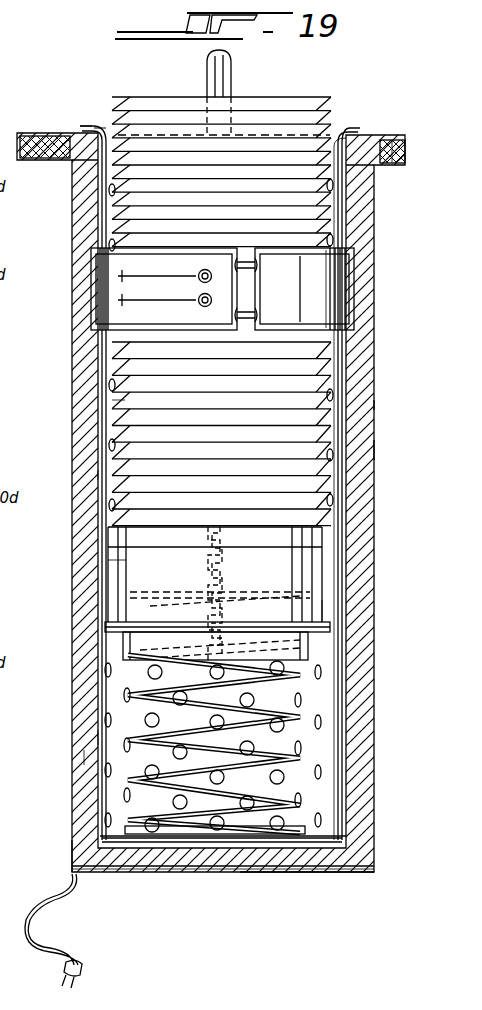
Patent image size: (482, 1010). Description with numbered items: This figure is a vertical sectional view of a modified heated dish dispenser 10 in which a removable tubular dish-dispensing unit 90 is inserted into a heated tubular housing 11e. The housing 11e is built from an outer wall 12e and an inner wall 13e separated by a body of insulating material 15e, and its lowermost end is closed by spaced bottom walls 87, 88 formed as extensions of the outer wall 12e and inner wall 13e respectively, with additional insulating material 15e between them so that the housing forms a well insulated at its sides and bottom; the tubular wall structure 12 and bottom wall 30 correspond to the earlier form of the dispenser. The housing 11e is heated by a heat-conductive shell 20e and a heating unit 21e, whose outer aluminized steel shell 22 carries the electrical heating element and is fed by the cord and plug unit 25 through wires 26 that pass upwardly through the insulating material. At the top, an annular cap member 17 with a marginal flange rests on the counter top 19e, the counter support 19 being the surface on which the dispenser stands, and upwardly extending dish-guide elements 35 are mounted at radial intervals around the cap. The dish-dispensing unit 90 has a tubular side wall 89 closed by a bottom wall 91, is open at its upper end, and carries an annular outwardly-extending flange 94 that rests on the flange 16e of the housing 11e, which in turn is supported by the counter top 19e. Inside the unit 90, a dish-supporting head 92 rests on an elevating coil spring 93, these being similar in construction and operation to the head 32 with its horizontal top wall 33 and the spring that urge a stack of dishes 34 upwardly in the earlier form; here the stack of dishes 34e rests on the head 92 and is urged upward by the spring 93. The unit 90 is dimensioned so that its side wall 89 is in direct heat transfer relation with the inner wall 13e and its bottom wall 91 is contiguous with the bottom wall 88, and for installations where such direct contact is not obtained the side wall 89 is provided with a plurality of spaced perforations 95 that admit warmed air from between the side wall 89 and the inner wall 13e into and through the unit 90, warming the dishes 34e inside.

The apparatus 10 is at (395, 390).
The tubular housing 11e is at (381, 455).
The tubular wall structure 12 is at (378, 496).
The outer wall 12e is at (72, 856).
The inner wall 13e is at (98, 762).
The body of insulating material 15e is at (96, 736).
The flange 16e is at (370, 135).
The annular cover or cap member 17 is at (340, 136).
The cup 19 is at (345, 620).
The counter top 19e is at (392, 165).
The heat-conductive shell 20e is at (300, 700).
The heating unit 21e is at (337, 317).
The heat-conductive outer aluminized steel shell 22 is at (322, 280).
The electrical conductor cord and plug unit 25 is at (64, 902).
The wires 26 is at (85, 456).
The bottom wall 30 is at (296, 876).
The dish-supporting and dish-dispensing unit or head 32 is at (320, 586).
The horizontal top wall 33 is at (345, 540).
The stack of dishes 34 is at (312, 387).
The stack of dishes 34e is at (128, 404).
The dish-guide elements 35 is at (226, 85).
The bottom wall 87 is at (204, 873).
The bottom wall 88 is at (136, 866).
The tubular side wall 89 is at (100, 222).
The tubular dish-dispensing unit 90 is at (103, 114).
The bottom wall 91 is at (112, 826).
The dish-supporting head 92 is at (115, 572).
The elevating coil spring 93 is at (140, 774).
The annular outwardly-extending flange 94 is at (86, 128).
The perforations 95 is at (322, 722).